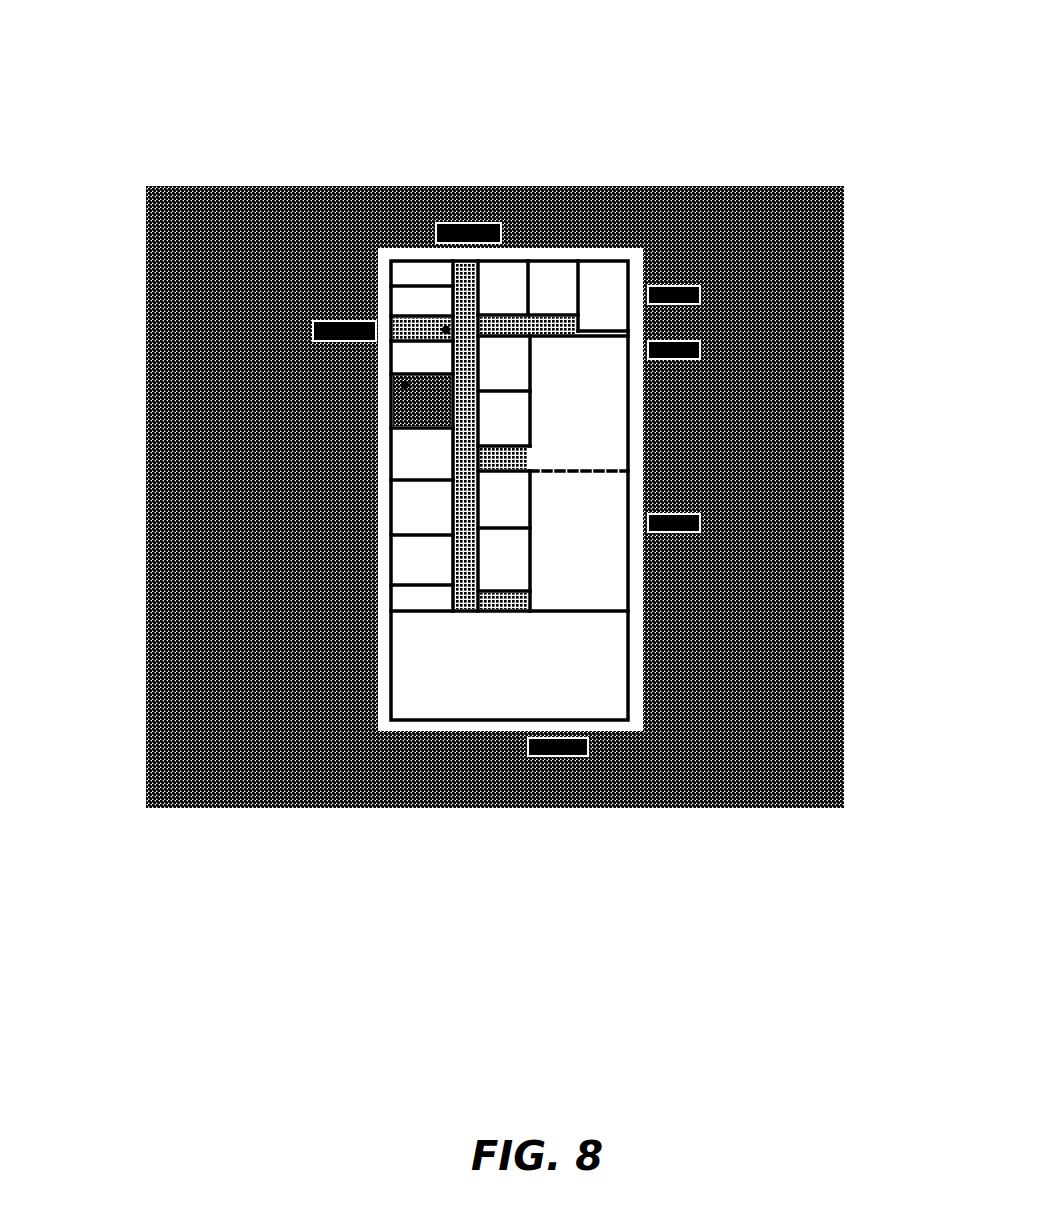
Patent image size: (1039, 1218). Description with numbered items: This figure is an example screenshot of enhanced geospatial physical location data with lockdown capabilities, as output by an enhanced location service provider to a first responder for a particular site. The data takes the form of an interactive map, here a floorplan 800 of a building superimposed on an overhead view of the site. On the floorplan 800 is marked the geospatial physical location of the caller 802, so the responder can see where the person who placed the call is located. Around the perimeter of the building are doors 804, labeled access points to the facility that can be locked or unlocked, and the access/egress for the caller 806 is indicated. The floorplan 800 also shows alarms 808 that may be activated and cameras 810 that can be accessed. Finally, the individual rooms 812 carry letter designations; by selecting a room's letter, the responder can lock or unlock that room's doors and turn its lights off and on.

The floorplan 800 is at (148, 94).
The geospatial physical location of the caller 802 is at (405, 400).
The doors 804 is at (325, 313).
The access/egress for the caller 806 is at (460, 262).
The alarms 808 is at (462, 600).
The cameras 810 is at (438, 322).
The rooms 812 is at (415, 446).